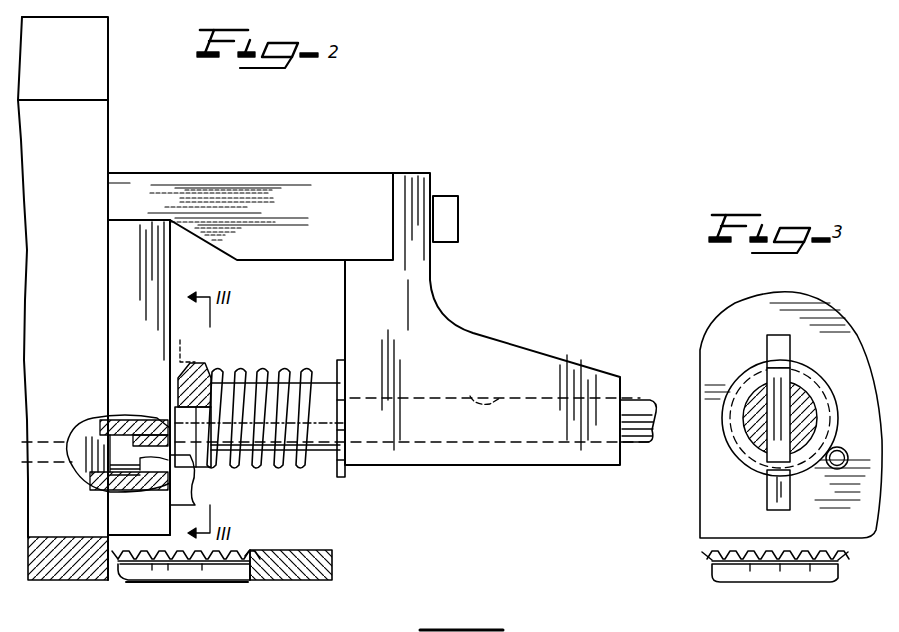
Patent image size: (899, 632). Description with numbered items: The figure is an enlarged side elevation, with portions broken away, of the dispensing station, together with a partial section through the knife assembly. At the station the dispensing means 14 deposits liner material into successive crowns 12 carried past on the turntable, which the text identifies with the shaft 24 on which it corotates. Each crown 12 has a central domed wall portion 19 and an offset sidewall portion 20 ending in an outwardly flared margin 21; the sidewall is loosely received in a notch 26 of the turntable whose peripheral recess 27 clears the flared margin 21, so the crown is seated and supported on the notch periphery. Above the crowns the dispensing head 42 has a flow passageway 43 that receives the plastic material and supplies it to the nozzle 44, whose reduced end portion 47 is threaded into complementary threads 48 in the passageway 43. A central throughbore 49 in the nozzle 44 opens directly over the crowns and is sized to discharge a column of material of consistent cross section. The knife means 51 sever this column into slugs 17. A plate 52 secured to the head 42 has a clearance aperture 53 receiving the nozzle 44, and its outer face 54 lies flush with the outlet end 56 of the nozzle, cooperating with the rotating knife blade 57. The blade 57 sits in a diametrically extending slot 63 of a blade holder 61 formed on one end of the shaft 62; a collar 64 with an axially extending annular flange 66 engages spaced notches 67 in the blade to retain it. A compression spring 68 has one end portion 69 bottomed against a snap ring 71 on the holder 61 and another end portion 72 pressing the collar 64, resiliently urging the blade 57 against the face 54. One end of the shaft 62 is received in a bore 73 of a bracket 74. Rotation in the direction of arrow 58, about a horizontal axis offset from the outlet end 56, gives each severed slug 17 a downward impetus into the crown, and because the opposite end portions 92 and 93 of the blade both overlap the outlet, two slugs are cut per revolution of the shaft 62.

In FIG. 2, the crown 12 is at (139, 589).
In FIG. 3, the crown 12 is at (734, 592).
In FIG. 2, the dispensing means 14 is at (145, 128).
In FIG. 3, the slug 17 is at (780, 585).
In FIG. 2, the central domed wall portion 19 is at (172, 582).
In FIG. 2, the offset sidewall portion 20 is at (115, 575).
In FIG. 2, the outwardly flared margin 21 is at (92, 580).
In FIG. 2, the upstanding shaft 24 is at (300, 590).
In FIG. 2, the notch 26 is at (240, 582).
In FIG. 2, the peripheral recess 27 is at (258, 560).
In FIG. 2, the dispensing head 42 is at (96, 158).
In FIG. 2, the flow passageway 43 is at (80, 440).
In FIG. 2, the nozzle 44 is at (118, 425).
In FIG. 2, the reduced end portion 47 is at (88, 478).
In FIG. 2, the threads 48 is at (86, 437).
In FIG. 2, the central throughbore 49 is at (150, 425).
In FIG. 3, the central throughbore 49 is at (845, 452).
In FIG. 2, the knife means 51 is at (255, 473).
In FIG. 2, the plate 52 is at (122, 282).
In FIG. 3, the plate 52 is at (700, 540).
In FIG. 2, the clearance aperture 53 is at (110, 488).
In FIG. 2, the outer face 54 is at (170, 262).
In FIG. 3, the outer face 54 is at (735, 536).
In FIG. 2, the outlet end 56 is at (180, 467).
In FIG. 3, the outlet end 56 is at (845, 465).
In FIG. 2, the knife blade 57 is at (200, 356).
In FIG. 3, the knife blade 57 is at (790, 500).
In FIG. 3, the arrow 58 is at (804, 332).
In FIG. 2, the blade holder 61 is at (335, 385).
In FIG. 3, the blade holder 61 is at (750, 400).
In FIG. 2, the shaft 62 is at (632, 398).
In FIG. 3, the slot 63 is at (790, 385).
In FIG. 2, the collar 64 is at (193, 373).
In FIG. 3, the collar 64 is at (725, 430).
In FIG. 2, the annular flange 66 is at (232, 378).
In FIG. 3, the annular flange 66 is at (732, 460).
In FIG. 2, the notch 67 is at (178, 380).
In FIG. 3, the notch 67 is at (770, 462).
In FIG. 2, the compression spring 68 is at (290, 380).
In FIG. 2, the end portion of spring 69 is at (296, 470).
In FIG. 2, the snap ring 71 is at (340, 478).
In FIG. 2, the end portion of spring 72 is at (212, 460).
In FIG. 2, the bore 73 is at (508, 392).
In FIG. 2, the bracket 74 is at (470, 330).
In FIG. 2, the end portion of knife blade 92 is at (190, 340).
In FIG. 3, the end portion of knife blade 92 is at (767, 345).
In FIG. 2, the end portion of knife blade 93 is at (172, 505).
In FIG. 3, the end portion of knife blade 93 is at (767, 492).